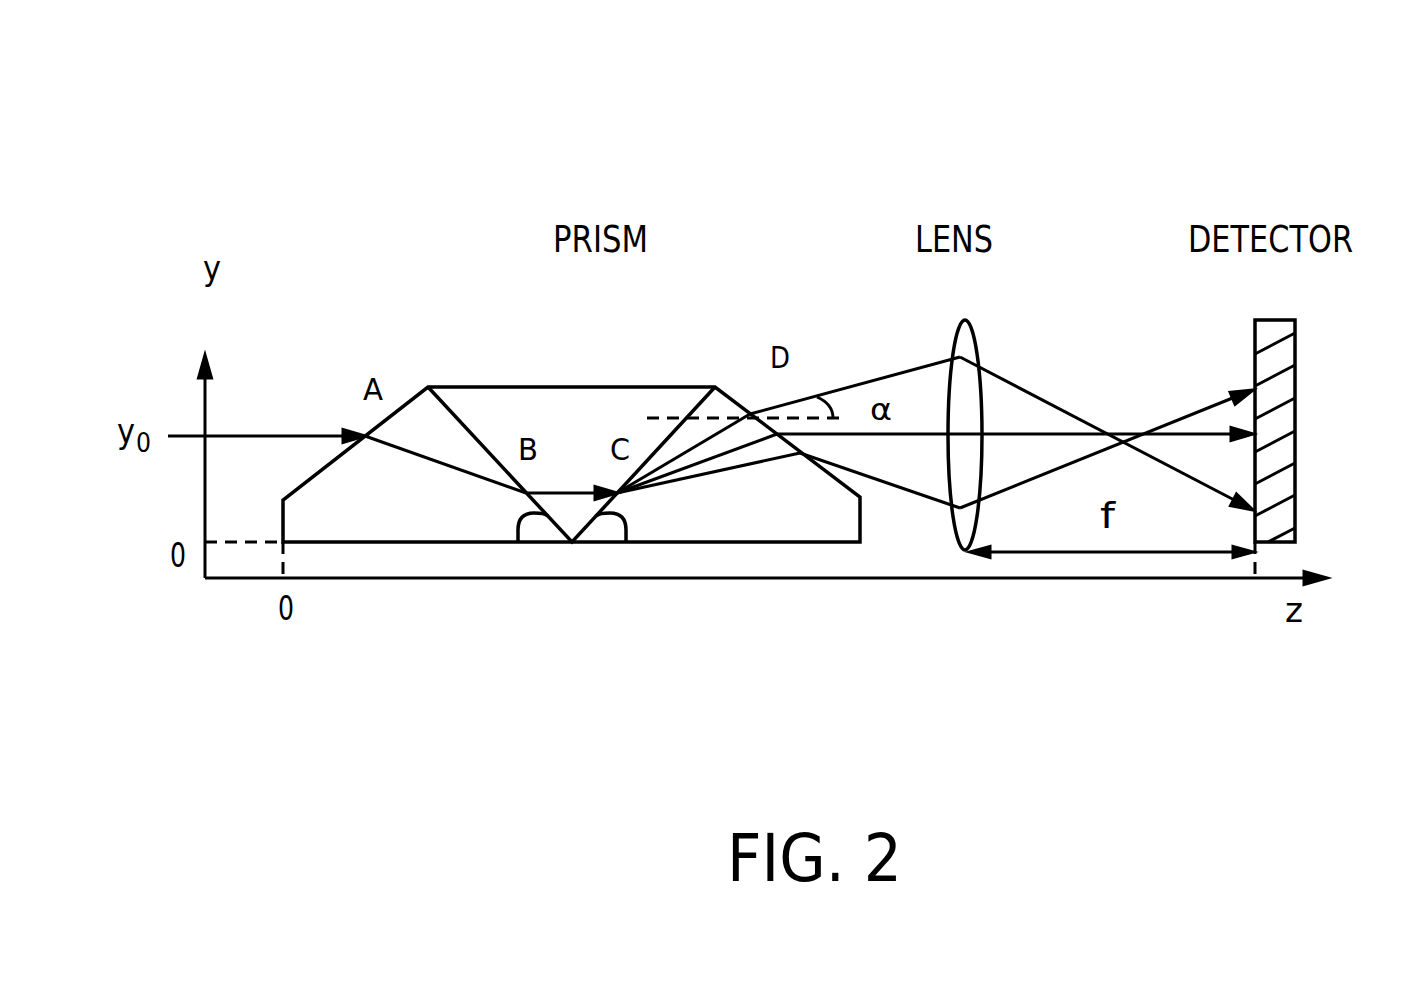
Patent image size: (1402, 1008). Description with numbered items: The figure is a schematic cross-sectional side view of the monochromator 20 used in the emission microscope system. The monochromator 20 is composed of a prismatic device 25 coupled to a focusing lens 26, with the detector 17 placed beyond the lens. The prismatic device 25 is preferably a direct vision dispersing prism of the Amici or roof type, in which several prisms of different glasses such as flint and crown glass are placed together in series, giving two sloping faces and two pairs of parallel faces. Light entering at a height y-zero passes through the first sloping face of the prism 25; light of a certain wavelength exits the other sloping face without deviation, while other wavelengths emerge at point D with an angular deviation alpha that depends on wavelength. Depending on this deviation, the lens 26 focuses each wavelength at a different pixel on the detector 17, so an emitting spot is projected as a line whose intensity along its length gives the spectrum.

The monochromator 20 is at (872, 112).
The prismatic device 25 is at (510, 407).
The focusing lens 26 is at (965, 543).
The detector 17 is at (1295, 378).